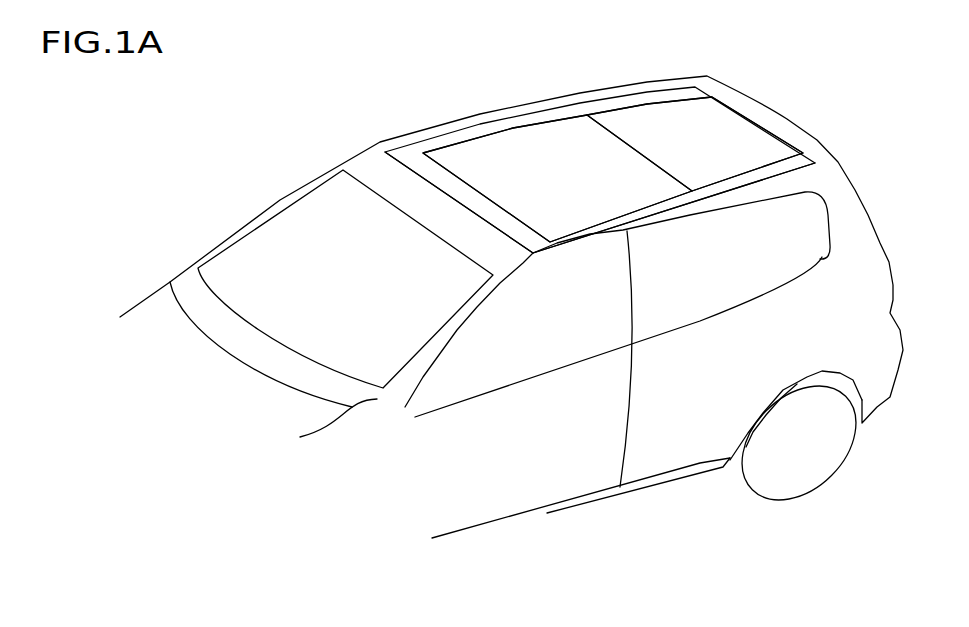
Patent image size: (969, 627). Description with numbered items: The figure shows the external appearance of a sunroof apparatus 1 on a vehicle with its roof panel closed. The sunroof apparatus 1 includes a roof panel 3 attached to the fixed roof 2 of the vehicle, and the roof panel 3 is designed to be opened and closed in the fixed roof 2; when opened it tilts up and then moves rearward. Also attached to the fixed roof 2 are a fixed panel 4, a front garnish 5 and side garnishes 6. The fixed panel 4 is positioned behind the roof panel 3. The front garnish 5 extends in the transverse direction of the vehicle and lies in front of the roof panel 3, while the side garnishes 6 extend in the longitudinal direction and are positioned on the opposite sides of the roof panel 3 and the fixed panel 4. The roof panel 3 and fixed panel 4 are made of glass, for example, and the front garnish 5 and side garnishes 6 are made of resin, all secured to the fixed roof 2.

The sunroof apparatus 1 is at (345, 103).
The fixed roof 2 is at (593, 100).
The roof panel 3 is at (548, 137).
The fixed panel 4 is at (667, 118).
The front garnish 5 is at (401, 154).
The side garnishes 6 is at (585, 228).